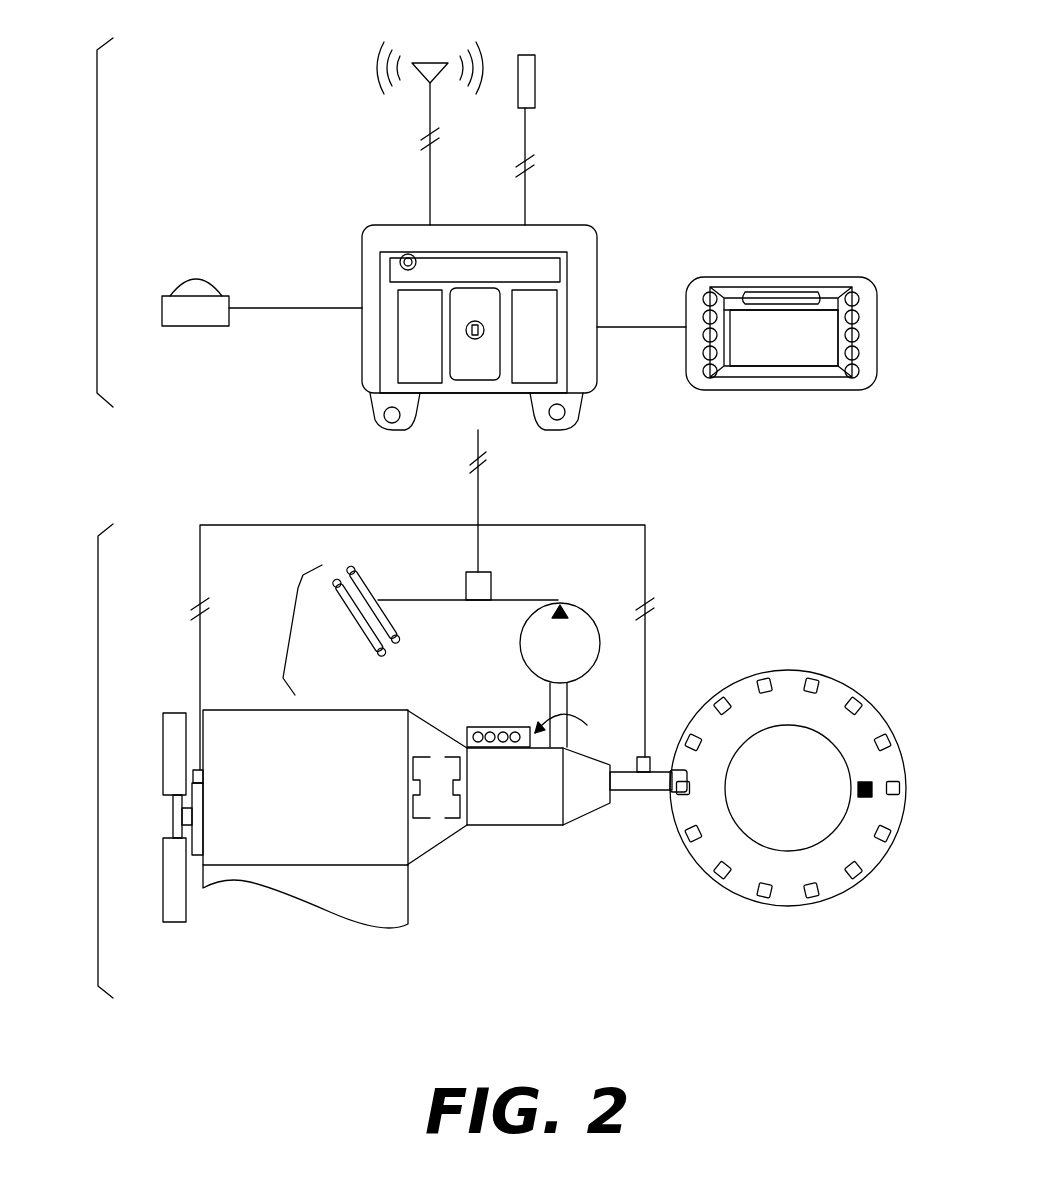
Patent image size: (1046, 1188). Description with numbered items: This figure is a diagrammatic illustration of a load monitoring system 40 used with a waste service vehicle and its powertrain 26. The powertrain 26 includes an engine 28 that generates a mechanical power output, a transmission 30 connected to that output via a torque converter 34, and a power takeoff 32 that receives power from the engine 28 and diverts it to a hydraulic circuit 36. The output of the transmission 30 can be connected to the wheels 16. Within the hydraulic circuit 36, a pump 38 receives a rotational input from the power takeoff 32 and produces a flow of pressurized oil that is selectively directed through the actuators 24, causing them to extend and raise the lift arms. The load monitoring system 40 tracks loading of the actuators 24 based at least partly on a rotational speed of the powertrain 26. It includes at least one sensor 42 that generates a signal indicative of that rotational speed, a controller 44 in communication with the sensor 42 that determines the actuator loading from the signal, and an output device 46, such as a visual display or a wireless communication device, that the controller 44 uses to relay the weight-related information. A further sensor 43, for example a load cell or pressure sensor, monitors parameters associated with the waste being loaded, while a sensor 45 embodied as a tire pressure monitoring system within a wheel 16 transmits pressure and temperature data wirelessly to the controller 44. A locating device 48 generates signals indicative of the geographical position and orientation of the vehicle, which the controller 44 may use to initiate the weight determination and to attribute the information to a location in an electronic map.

The wheels 16 is at (801, 801).
The actuators 24 is at (372, 638).
The powertrain 26 is at (98, 746).
The engine 28 is at (318, 802).
The transmission 30 is at (528, 802).
The power takeoff (PTO) 32 is at (560, 735).
The torque converter 34 is at (430, 837).
The hydraulic circuit 36 is at (300, 617).
The pump 38 is at (573, 656).
The load monitoring system 40 is at (97, 229).
The sensor 42 is at (492, 583).
The sensor 43 is at (535, 85).
The controller 44 is at (597, 238).
The sensor 45 is at (872, 790).
The output device 46 is at (430, 102).
The locating device 48 is at (194, 277).